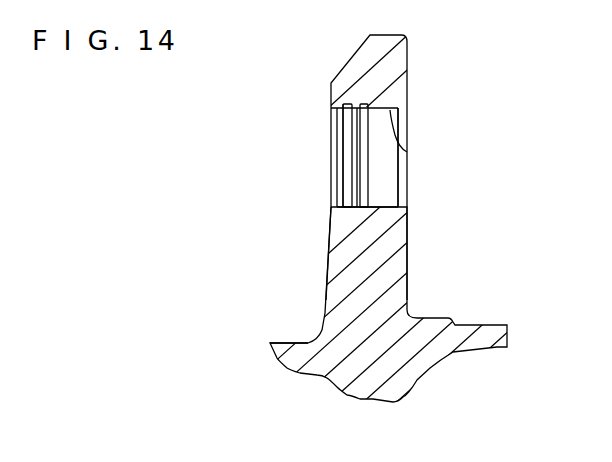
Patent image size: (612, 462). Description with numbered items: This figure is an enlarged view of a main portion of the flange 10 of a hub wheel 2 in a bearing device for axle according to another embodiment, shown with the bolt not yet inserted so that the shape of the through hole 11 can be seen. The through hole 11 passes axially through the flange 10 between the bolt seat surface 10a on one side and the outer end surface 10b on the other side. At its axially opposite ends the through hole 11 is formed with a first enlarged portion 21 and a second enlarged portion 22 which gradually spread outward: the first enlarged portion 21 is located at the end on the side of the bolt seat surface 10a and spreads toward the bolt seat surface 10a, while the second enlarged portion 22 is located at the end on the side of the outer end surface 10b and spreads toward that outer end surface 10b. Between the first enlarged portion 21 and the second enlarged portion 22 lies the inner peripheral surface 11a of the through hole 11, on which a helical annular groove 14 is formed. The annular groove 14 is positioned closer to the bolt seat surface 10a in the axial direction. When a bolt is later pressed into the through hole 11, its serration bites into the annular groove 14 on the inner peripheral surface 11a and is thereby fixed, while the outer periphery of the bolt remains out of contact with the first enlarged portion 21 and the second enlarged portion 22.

The flange 10 is at (347, 64).
The bolt seat surface 10a is at (331, 231).
The outer end surface 10b is at (407, 240).
The hub wheel 2 is at (292, 344).
The first enlarged portion 21 is at (337, 108).
The second enlarged portion 22 is at (404, 117).
The annular groove 14 is at (345, 107).
The through hole 11 is at (409, 137).
The inner peripheral surface 11a is at (407, 152).